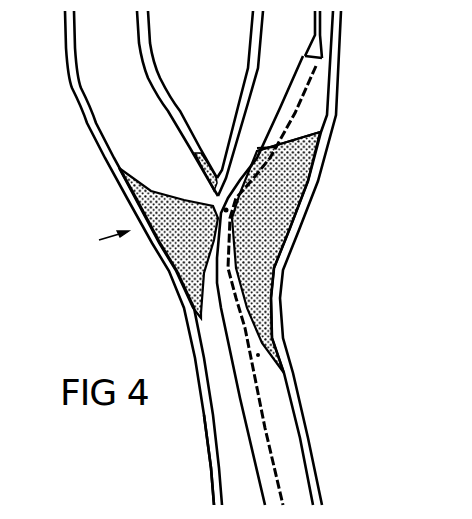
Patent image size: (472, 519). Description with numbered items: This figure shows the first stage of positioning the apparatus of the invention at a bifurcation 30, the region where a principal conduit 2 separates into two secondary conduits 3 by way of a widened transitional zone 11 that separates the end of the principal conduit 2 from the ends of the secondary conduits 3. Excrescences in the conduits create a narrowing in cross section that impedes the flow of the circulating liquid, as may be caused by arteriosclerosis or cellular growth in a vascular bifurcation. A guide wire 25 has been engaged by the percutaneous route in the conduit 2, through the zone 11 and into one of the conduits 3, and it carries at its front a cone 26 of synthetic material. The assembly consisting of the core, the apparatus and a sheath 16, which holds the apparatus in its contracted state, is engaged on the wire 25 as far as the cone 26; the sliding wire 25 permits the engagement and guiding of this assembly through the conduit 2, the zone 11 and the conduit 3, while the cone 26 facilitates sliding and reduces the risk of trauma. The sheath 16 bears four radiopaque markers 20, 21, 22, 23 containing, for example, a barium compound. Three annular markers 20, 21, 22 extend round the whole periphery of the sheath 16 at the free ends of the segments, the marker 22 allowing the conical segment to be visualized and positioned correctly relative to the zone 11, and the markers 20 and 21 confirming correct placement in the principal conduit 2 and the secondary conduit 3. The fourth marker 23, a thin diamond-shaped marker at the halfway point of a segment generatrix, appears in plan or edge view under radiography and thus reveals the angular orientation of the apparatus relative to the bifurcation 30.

The principal conduit 2 is at (206, 406).
The secondary conduits 3 is at (57, 58).
The widened transitional zone 11 is at (158, 250).
The sheath 16 is at (250, 347).
The radiopaque marker 20 is at (210, 275).
The radiopaque marker 21 is at (250, 142).
The radiopaque marker 22 is at (215, 200).
The radiopaque marker 23 is at (233, 212).
The guide wire 25 is at (307, 18).
The cone 26 is at (304, 46).
The bifurcation 30 is at (99, 237).